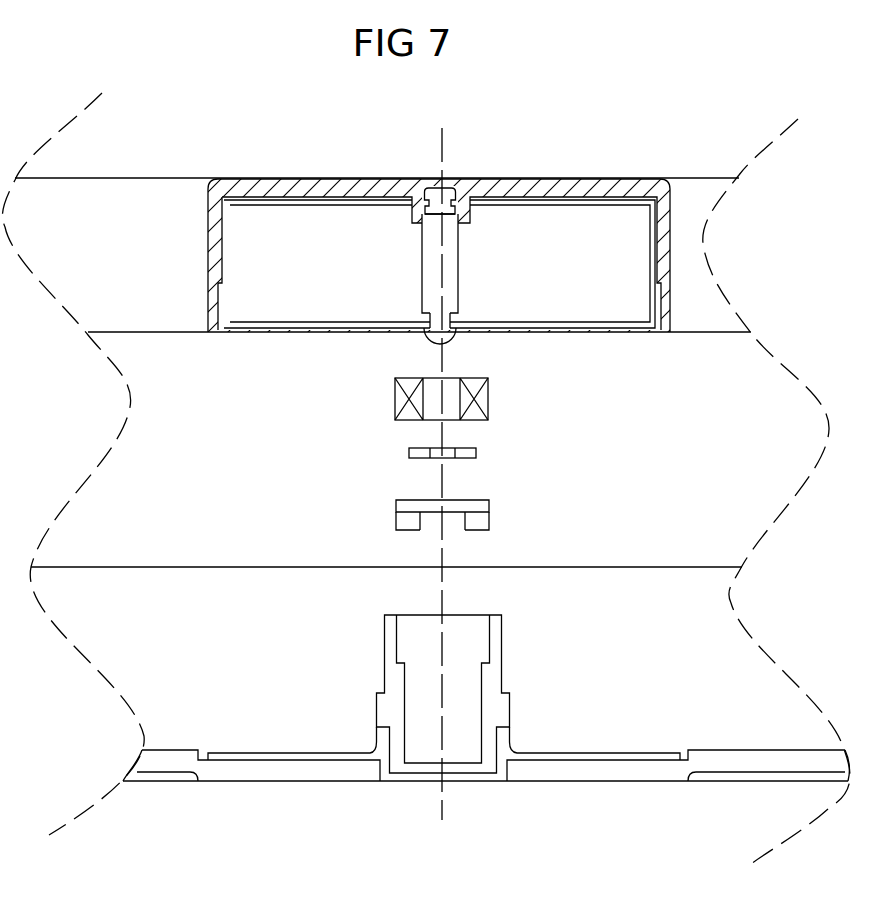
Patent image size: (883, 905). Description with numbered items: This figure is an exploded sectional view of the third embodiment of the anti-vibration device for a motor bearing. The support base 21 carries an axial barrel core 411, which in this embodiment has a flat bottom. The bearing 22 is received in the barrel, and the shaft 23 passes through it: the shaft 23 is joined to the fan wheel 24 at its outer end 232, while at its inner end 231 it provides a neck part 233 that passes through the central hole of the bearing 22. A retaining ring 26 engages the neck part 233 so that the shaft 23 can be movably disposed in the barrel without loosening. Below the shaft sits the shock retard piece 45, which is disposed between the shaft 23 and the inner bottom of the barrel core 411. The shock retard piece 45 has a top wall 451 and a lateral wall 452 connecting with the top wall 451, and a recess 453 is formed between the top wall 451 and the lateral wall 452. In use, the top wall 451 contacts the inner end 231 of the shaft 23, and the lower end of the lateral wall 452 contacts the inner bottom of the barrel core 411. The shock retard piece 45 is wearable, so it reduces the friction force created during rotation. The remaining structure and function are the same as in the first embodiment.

The support base 21 is at (632, 767).
The bearing 22 is at (484, 398).
The shaft 23 is at (480, 265).
The inner end 231 is at (430, 343).
The outer end 232 is at (456, 197).
The neck part 233 is at (457, 334).
The fan wheel 24 is at (338, 176).
The retaining ring 26 is at (475, 448).
The shock retard piece 45 is at (536, 514).
The top wall 451 is at (455, 505).
The lateral wall 452 is at (480, 518).
The recess 453 is at (453, 515).
The axial barrel core 411 is at (388, 622).